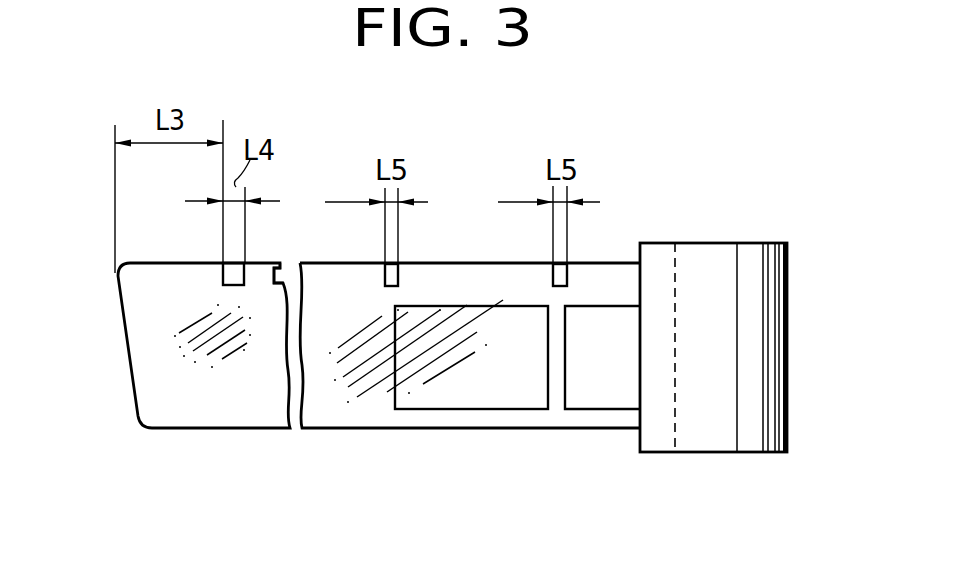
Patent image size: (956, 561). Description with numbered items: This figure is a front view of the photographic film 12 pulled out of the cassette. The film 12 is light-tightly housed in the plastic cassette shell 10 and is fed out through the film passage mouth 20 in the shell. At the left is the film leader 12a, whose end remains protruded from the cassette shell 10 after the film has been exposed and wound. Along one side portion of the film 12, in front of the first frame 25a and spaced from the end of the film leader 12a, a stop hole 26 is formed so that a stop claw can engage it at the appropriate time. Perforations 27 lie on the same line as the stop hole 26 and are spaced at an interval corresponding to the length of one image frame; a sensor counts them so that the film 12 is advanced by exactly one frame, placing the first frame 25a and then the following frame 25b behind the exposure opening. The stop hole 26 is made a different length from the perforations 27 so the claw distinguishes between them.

The cassette shell 10 is at (772, 308).
The photographic film 12 is at (337, 393).
The film leader 12a is at (220, 284).
The film passage mouth 20 is at (640, 378).
The first frame 25a is at (447, 410).
The second frame 25b is at (595, 410).
The stop hole 26 is at (221, 284).
The perforations 27 is at (279, 261).